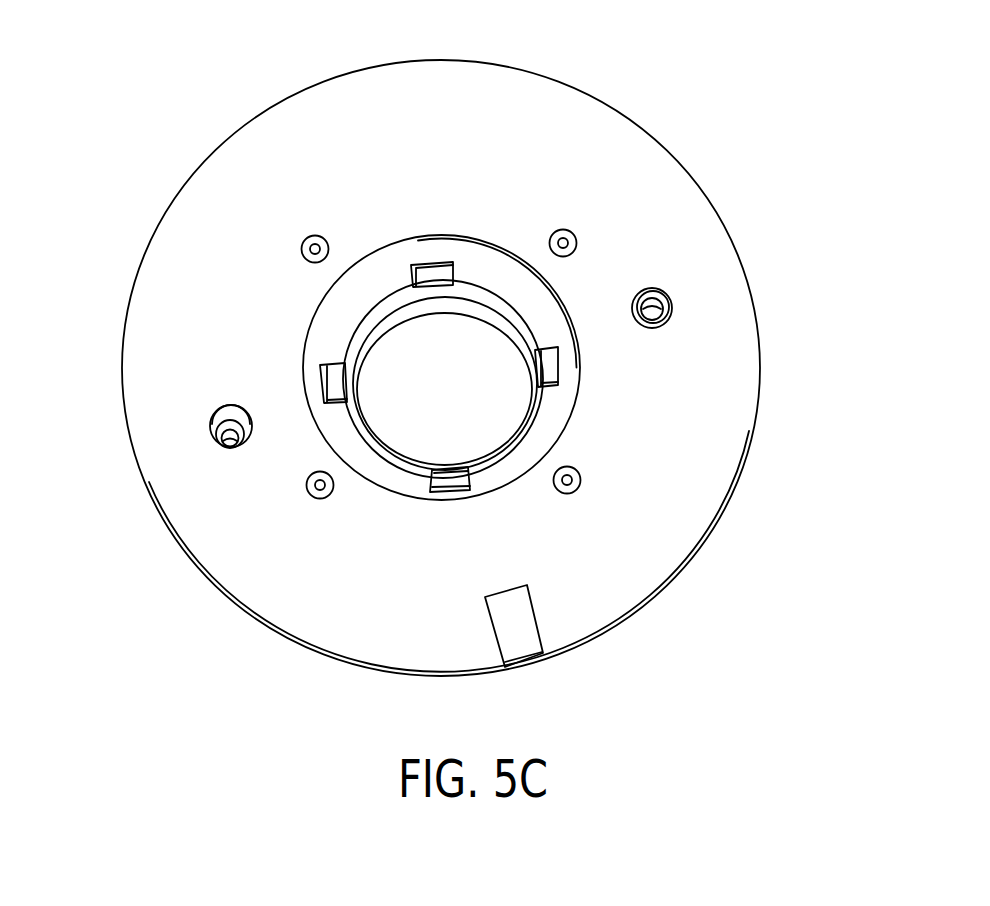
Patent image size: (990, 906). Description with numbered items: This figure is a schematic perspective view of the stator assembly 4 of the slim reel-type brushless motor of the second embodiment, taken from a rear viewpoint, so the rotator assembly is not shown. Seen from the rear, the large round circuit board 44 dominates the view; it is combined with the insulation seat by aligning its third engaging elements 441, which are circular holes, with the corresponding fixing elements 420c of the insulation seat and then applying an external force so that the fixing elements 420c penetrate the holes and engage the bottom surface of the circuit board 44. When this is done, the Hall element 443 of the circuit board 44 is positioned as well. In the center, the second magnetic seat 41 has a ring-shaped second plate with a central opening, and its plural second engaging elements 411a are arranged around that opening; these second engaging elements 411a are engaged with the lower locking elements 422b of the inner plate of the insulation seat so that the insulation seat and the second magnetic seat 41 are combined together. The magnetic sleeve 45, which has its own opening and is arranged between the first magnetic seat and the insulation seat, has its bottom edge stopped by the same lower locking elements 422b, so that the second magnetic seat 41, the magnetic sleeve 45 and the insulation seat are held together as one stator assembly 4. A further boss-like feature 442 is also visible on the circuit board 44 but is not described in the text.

The stator assembly 4 is at (986, 63).
The second magnetic seat 41 is at (558, 399).
The second engaging elements 411a is at (470, 488).
The fixing elements 420c is at (576, 243).
The lower locking elements 422b is at (547, 365).
The circuit board 44 is at (657, 202).
The third engaging elements 441 is at (562, 230).
The positioning boss 442 is at (663, 290).
The Hall element 443 is at (523, 610).
The magnetic sleeve 45 is at (513, 320).